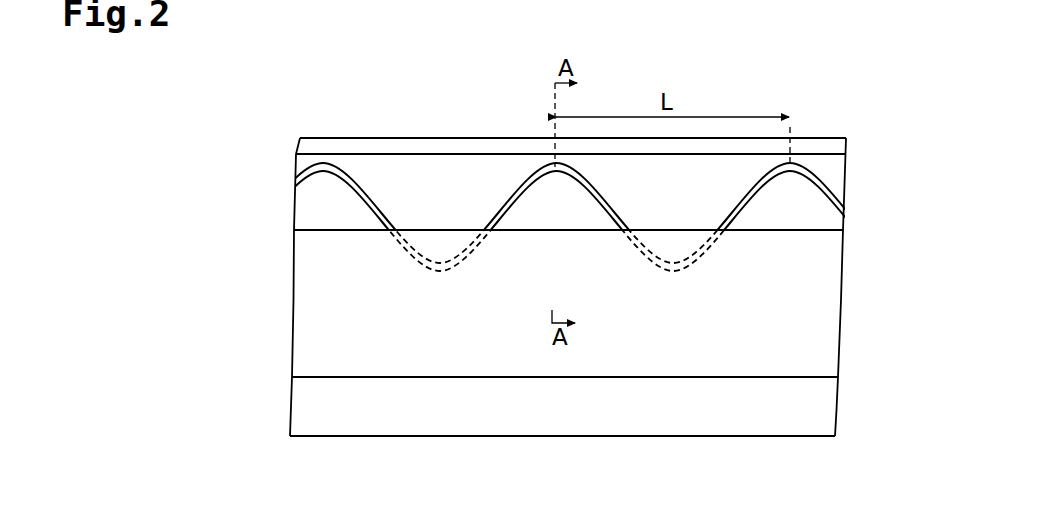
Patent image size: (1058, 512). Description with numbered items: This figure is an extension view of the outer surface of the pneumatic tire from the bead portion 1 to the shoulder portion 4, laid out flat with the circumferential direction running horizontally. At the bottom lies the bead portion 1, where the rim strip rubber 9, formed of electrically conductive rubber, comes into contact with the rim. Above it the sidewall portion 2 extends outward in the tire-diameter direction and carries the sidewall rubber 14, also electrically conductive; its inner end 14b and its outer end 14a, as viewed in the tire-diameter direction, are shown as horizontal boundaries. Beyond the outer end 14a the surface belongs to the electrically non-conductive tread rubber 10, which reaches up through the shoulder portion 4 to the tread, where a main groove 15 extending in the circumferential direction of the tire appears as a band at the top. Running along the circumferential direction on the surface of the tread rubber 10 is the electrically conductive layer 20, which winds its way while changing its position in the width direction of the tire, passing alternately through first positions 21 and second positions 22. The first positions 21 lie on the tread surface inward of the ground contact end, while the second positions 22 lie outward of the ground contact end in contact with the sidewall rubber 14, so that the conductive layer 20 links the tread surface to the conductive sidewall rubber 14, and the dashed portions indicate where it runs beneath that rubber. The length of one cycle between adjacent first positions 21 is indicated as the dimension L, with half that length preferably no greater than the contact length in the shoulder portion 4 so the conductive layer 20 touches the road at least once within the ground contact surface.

The bead portion 1 is at (851, 412).
The sidewall portion 2 is at (854, 312).
The shoulder portion 4 is at (858, 192).
The rim strip rubber 9 is at (400, 423).
The tread rubber 10 is at (270, 287).
The sidewall rubber 14 is at (490, 365).
The outer end of the sidewall rubber 14a is at (518, 231).
The inner end of the sidewall rubber 14b is at (590, 380).
The main groove 15 is at (733, 147).
The electrically conductive layer 20 is at (492, 215).
The first position 21 is at (323, 162).
The second position 22 is at (430, 266).